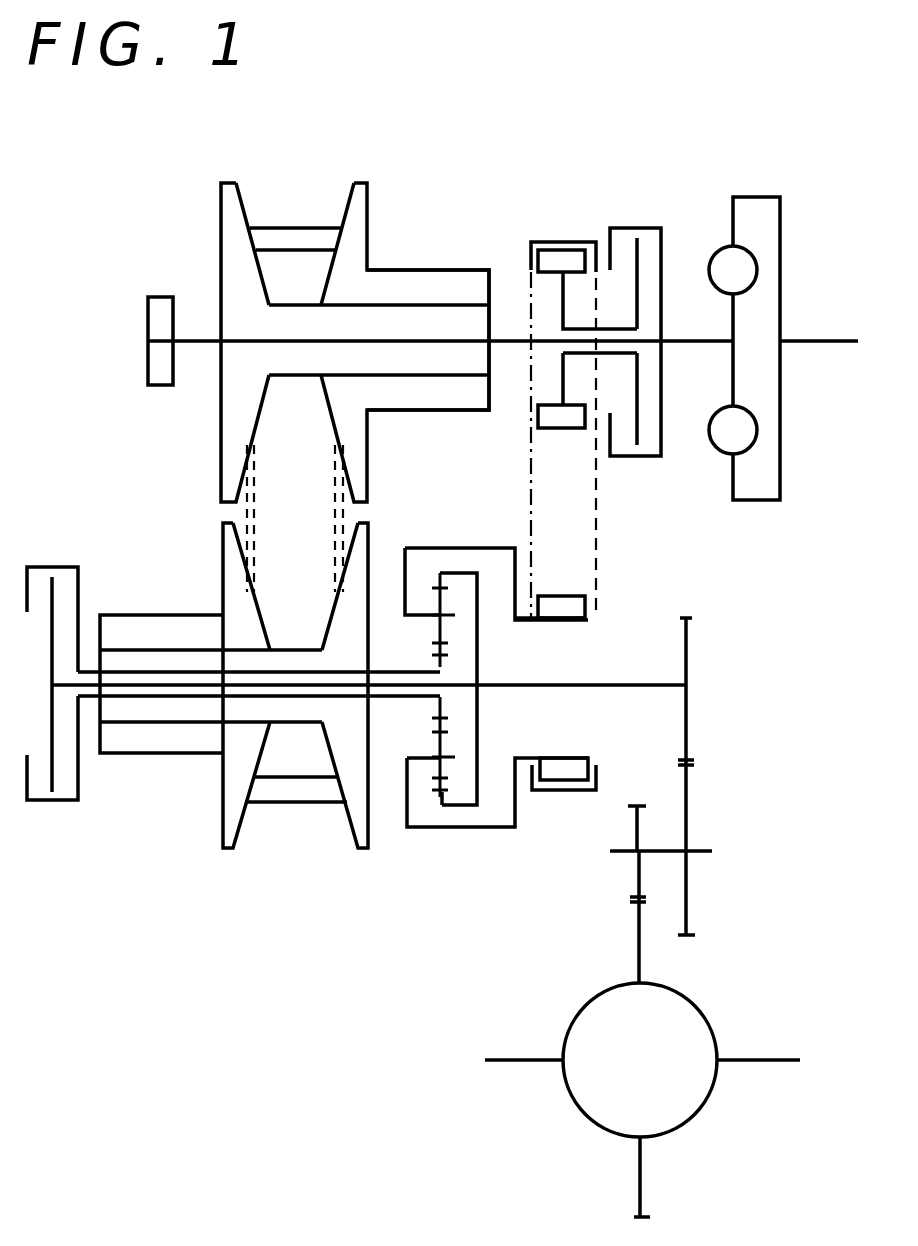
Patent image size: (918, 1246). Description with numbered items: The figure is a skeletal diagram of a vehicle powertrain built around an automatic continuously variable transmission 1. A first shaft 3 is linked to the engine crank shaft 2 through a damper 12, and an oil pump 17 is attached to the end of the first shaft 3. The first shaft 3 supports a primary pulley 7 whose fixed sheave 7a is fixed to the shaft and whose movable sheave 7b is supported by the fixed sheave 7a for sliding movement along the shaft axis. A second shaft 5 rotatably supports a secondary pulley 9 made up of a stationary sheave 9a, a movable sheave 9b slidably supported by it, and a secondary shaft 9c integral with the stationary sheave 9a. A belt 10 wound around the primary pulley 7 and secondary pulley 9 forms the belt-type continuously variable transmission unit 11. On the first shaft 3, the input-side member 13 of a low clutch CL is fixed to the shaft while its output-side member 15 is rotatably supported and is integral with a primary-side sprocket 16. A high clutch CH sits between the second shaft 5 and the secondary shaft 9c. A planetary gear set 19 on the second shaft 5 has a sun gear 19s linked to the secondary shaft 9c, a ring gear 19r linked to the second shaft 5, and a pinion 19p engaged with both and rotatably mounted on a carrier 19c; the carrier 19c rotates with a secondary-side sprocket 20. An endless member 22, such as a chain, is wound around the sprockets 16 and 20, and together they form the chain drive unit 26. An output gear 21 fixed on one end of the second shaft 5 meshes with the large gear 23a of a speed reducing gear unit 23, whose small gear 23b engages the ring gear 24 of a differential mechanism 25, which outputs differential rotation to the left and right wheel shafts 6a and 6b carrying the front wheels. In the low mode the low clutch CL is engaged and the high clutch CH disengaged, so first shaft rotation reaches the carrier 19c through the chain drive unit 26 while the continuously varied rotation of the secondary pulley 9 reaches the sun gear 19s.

The continuously variable transmission 1 is at (477, 173).
The engine crank shaft 2 is at (817, 341).
The first shaft 3 is at (690, 340).
The second shaft 5 is at (599, 686).
The left wheel shaft 6a is at (513, 1060).
The right wheel shaft 6b is at (763, 1060).
The primary pulley 7 is at (332, 312).
The fixed sheave 7a is at (228, 228).
The movable sheave 7b is at (361, 252).
The secondary pulley 9 is at (259, 725).
The stationary sheave 9a is at (368, 849).
The movable sheave 9b is at (222, 823).
The secondary shaft 9c is at (393, 700).
The belt 10 is at (291, 235).
The belt-type continuously variable transmission unit 11 is at (403, 212).
The damper 12 is at (722, 248).
The input-side member 13 is at (638, 228).
The output-side member 15 is at (637, 293).
The primary-side sprocket 16 is at (557, 250).
The oil pump 17 is at (150, 315).
The planetary gear set 19 is at (479, 750).
The carrier 19c is at (415, 768).
The pinion 19p is at (440, 627).
The ring gear 19r is at (447, 797).
The sun gear 19s is at (442, 703).
The secondary-side sprocket 20 is at (560, 790).
The output gear 21 is at (688, 667).
The endless member 22 is at (596, 543).
The speed reducing gear unit 23 is at (656, 864).
The large gear 23a is at (688, 893).
The small gear 23b is at (633, 873).
The ring gear 24 is at (637, 937).
The differential mechanism 25 is at (704, 1007).
The chain drive unit 26 is at (615, 514).
The high clutch CH is at (45, 558).
The low clutch CL is at (617, 224).